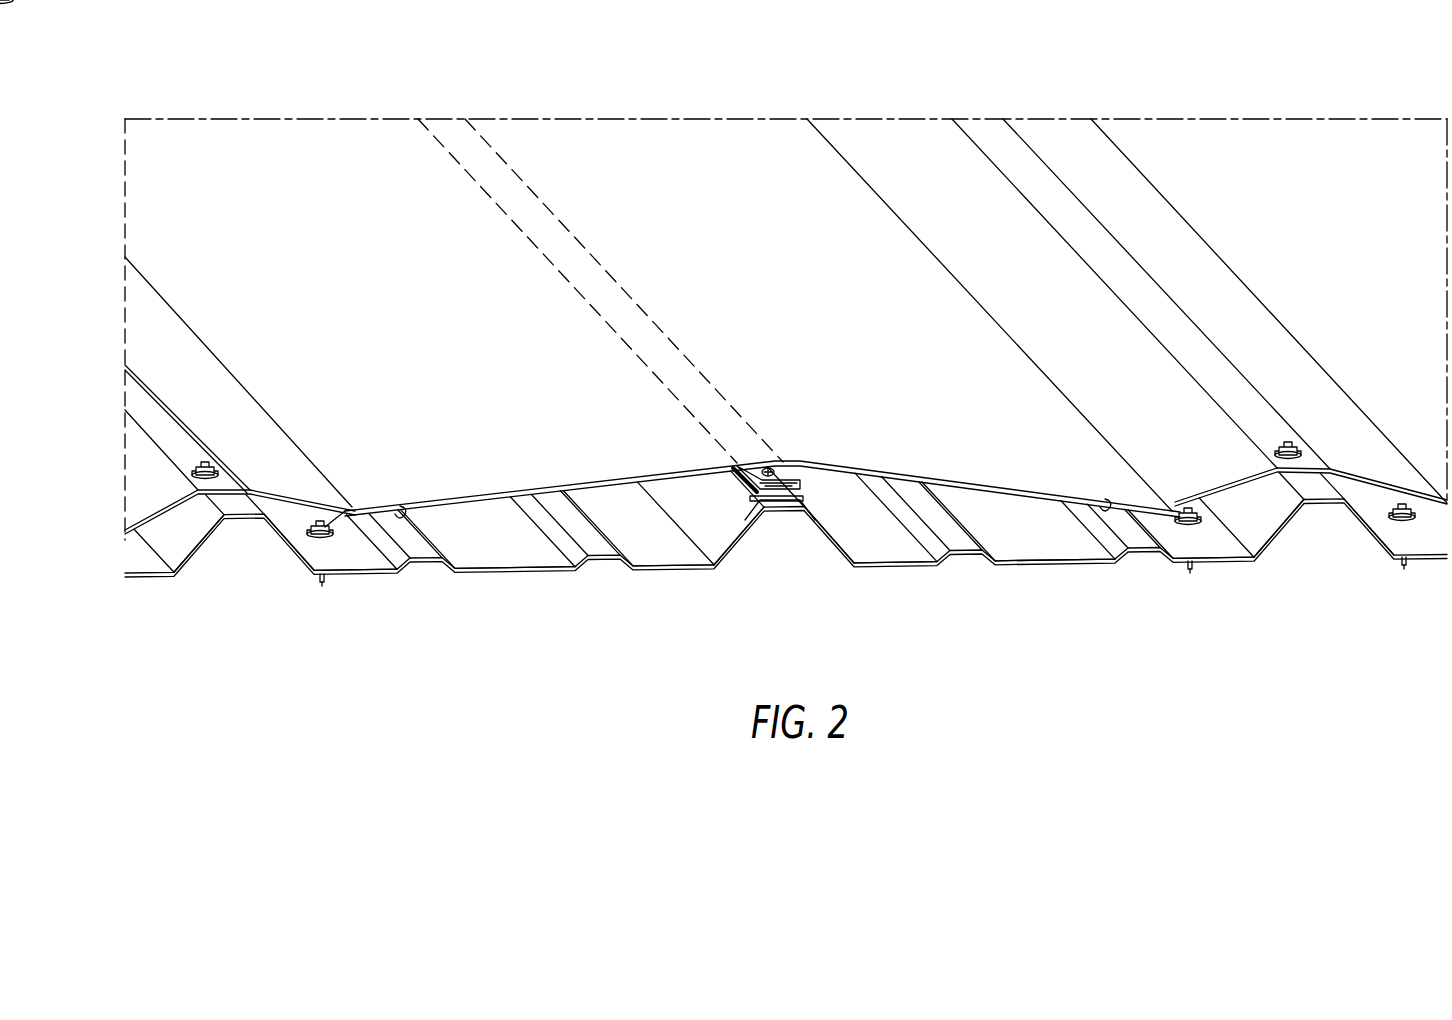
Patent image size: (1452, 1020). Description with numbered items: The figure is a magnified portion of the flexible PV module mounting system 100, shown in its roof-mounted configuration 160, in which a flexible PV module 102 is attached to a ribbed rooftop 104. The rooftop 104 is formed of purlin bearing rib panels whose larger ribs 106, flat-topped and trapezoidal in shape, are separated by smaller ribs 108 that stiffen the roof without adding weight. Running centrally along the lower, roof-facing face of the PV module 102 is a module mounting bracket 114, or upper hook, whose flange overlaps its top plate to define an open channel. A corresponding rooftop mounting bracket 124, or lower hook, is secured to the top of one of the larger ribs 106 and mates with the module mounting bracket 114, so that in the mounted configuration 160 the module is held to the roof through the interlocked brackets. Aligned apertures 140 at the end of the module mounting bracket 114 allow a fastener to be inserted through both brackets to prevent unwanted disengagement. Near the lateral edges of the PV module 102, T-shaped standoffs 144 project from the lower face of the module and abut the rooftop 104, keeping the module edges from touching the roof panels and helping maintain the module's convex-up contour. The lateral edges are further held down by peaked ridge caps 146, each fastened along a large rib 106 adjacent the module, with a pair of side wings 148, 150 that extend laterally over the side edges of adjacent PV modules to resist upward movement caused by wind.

The mounting system 100 is at (507, 82).
The flexible PV module 102 is at (695, 261).
The ribbed rooftop 104 is at (897, 562).
The larger ribs 106 is at (208, 540).
The smaller ribs 108 is at (432, 570).
The module mounting bracket 114 is at (784, 474).
The rooftop mounting bracket 124 is at (792, 505).
The aligned apertures 140 is at (762, 466).
The standoffs 144 is at (399, 520).
The ridge cap 146 is at (1019, 286).
The side wing 148 is at (163, 520).
The side wing 150 is at (297, 508).
The roof-mounted configuration 160 is at (605, 87).